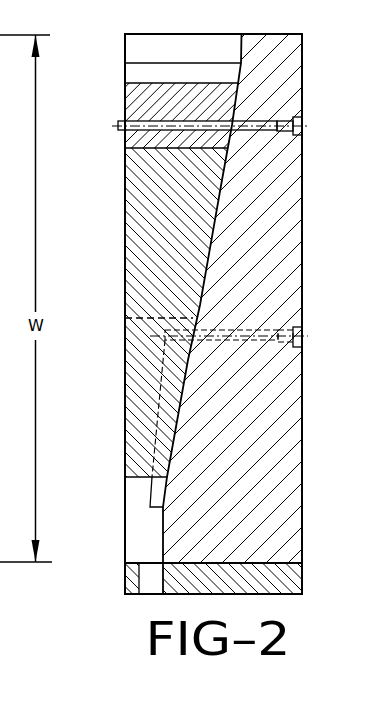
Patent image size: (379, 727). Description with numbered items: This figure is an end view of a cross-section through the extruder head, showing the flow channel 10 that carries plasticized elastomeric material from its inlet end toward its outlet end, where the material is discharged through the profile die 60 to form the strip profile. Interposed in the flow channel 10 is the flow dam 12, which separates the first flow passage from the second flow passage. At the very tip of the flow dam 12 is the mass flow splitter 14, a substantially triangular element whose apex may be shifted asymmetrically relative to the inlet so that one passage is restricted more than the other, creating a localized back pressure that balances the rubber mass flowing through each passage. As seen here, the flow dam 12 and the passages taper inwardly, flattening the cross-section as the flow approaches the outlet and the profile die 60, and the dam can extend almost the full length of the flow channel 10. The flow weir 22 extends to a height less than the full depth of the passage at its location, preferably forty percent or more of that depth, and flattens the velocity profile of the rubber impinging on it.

The flow channel 10 is at (260, 438).
The flow dam 12 is at (152, 218).
The mass flow splitter 14 is at (124, 113).
The flow weir 22 is at (155, 498).
The profile die 60 is at (267, 580).